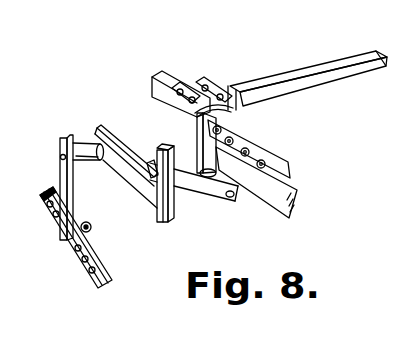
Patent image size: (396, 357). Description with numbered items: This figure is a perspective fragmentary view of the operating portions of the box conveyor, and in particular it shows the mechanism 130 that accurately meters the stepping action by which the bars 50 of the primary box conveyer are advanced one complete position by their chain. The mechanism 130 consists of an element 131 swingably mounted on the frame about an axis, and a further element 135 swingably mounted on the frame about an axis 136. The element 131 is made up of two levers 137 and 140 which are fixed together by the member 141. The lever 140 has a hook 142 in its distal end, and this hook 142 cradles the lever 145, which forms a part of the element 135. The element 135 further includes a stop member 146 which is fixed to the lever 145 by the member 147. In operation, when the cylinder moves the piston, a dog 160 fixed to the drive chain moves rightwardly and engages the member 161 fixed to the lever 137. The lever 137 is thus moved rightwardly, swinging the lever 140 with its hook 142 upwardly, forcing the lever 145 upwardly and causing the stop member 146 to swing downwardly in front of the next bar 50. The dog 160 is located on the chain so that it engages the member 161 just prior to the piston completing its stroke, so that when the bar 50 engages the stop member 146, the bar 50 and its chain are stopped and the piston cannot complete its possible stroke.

The mechanism 130 is at (251, 57).
The bar 50 is at (302, 66).
The element 131 is at (114, 118).
The member 141 is at (84, 143).
The lever 140 is at (121, 163).
The stop member 146 is at (199, 152).
The member 147 is at (222, 172).
The lever 137 is at (62, 183).
The dog 160 is at (78, 217).
The member 161 is at (91, 224).
The hook 142 is at (160, 213).
The lever 145 is at (193, 186).
The axis 136 is at (234, 198).
The element 135 is at (226, 219).